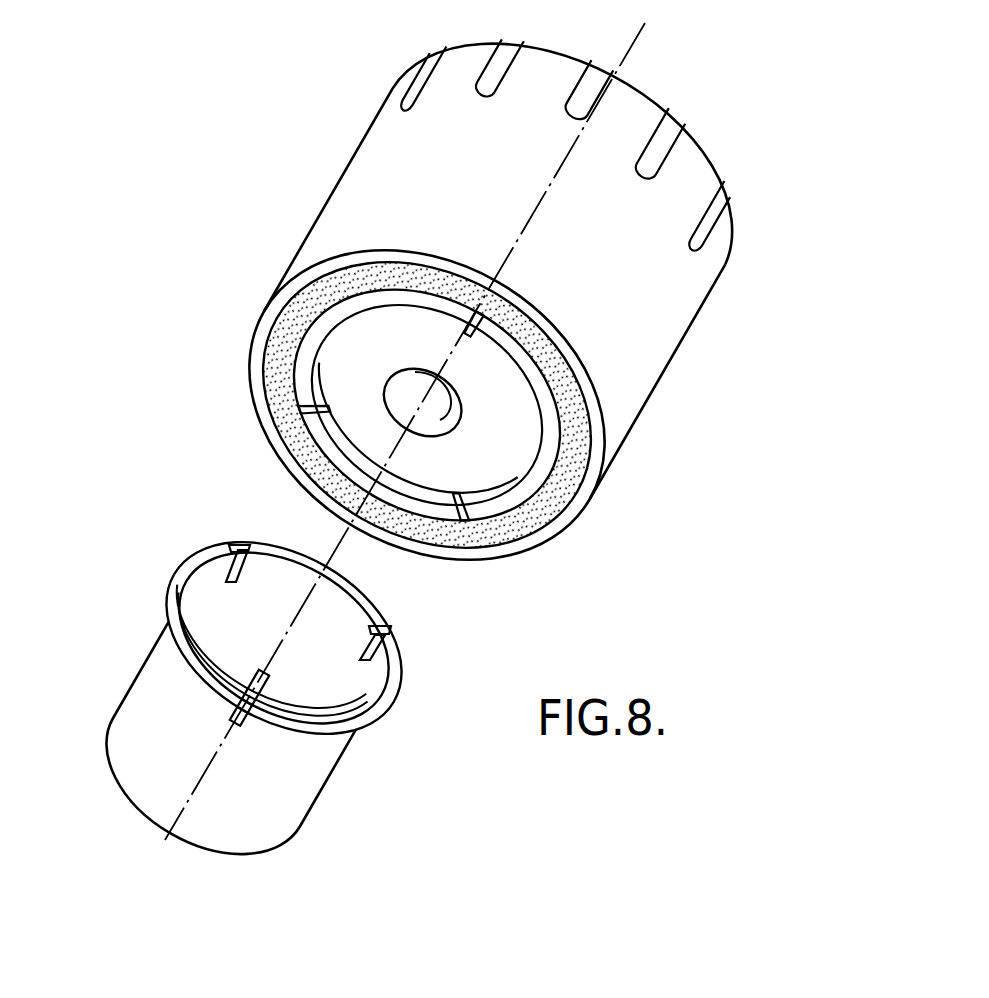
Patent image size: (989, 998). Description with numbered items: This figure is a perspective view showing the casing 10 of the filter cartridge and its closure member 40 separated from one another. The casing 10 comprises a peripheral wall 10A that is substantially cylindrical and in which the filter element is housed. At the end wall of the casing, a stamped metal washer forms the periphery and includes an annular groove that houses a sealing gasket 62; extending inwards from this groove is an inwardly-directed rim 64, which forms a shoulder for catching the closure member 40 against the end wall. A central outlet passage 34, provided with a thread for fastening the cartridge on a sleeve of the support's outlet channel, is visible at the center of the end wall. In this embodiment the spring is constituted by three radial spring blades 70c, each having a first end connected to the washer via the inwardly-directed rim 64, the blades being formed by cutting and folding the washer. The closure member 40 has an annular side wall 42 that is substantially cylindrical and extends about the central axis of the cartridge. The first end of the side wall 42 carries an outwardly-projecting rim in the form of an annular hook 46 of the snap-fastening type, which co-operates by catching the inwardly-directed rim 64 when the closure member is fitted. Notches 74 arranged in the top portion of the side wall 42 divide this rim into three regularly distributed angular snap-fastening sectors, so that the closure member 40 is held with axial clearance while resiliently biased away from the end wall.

The outer casing 10 is at (290, 208).
The peripheral wall 10A is at (650, 345).
The outlet passage 34 is at (443, 417).
The closure member 40 is at (120, 641).
The annular side wall 42 is at (295, 785).
The annular hook 46 is at (392, 698).
The sealing gasket 62 is at (562, 488).
The inwardly-directed rim 64 is at (302, 385).
The radial spring blades 70c is at (328, 417).
The notches 74 is at (222, 547).